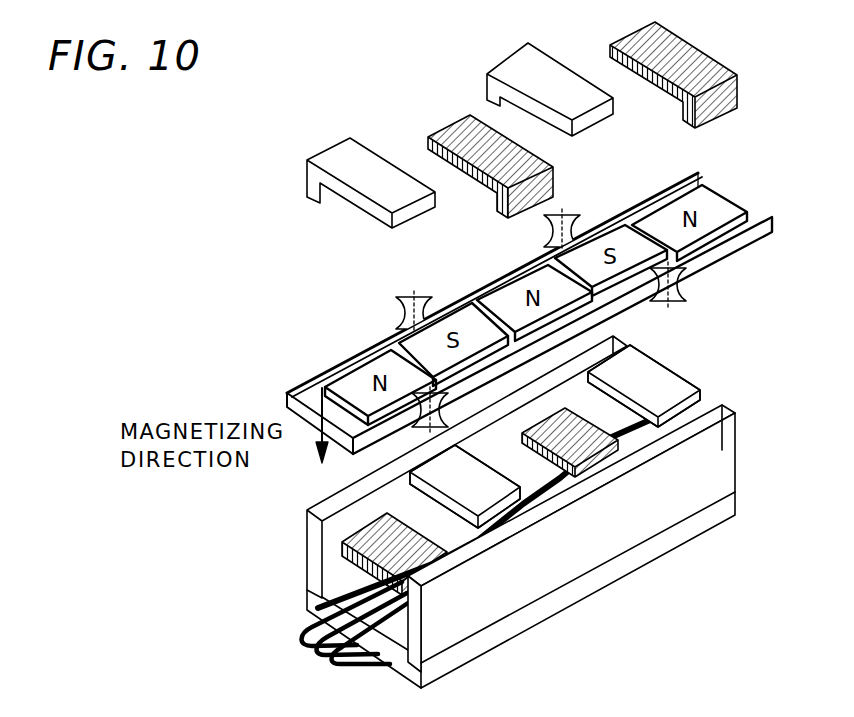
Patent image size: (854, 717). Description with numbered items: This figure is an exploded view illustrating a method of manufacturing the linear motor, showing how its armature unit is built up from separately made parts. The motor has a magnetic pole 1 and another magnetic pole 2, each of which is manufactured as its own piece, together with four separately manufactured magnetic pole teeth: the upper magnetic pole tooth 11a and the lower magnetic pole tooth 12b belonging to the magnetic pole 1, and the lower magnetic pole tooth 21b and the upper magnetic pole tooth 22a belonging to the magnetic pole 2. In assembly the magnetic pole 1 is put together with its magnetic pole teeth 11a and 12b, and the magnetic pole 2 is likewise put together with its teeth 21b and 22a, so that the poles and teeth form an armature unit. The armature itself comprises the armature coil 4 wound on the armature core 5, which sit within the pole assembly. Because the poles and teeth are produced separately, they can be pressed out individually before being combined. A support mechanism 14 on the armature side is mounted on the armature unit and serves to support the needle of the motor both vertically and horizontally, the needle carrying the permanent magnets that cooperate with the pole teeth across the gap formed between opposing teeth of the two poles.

The magnetic pole 1 is at (313, 553).
The magnetic pole 2 is at (412, 617).
The armature coil 4 is at (312, 625).
The armature core 5 is at (405, 668).
The upper magnetic pole tooth 11a is at (356, 168).
The lower magnetic pole tooth 12b is at (487, 491).
The support mechanism 14 is at (688, 292).
The lower magnetic pole tooth 21b is at (450, 565).
The upper magnetic pole tooth 22a is at (463, 136).